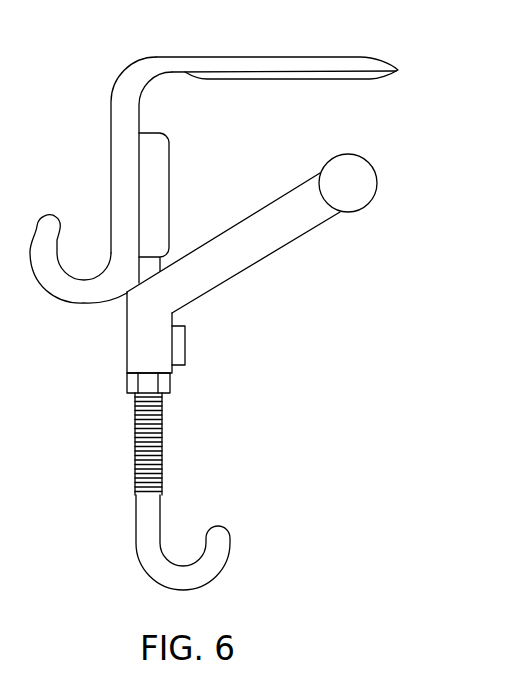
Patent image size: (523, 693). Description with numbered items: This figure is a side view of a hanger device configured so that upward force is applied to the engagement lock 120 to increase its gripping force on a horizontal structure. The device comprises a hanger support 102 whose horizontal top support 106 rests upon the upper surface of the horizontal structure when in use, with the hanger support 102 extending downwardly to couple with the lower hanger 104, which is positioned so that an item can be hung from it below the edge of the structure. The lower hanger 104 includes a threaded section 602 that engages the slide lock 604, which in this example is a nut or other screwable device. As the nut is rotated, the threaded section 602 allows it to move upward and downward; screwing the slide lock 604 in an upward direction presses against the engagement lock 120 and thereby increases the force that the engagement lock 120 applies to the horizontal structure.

The hanger support 102 is at (137, 68).
The horizontal top support 106 is at (308, 55).
The engagement lock 120 is at (262, 263).
The slide lock 604 is at (127, 385).
The threaded section 602 is at (135, 460).
The lower hanger 104 is at (137, 542).